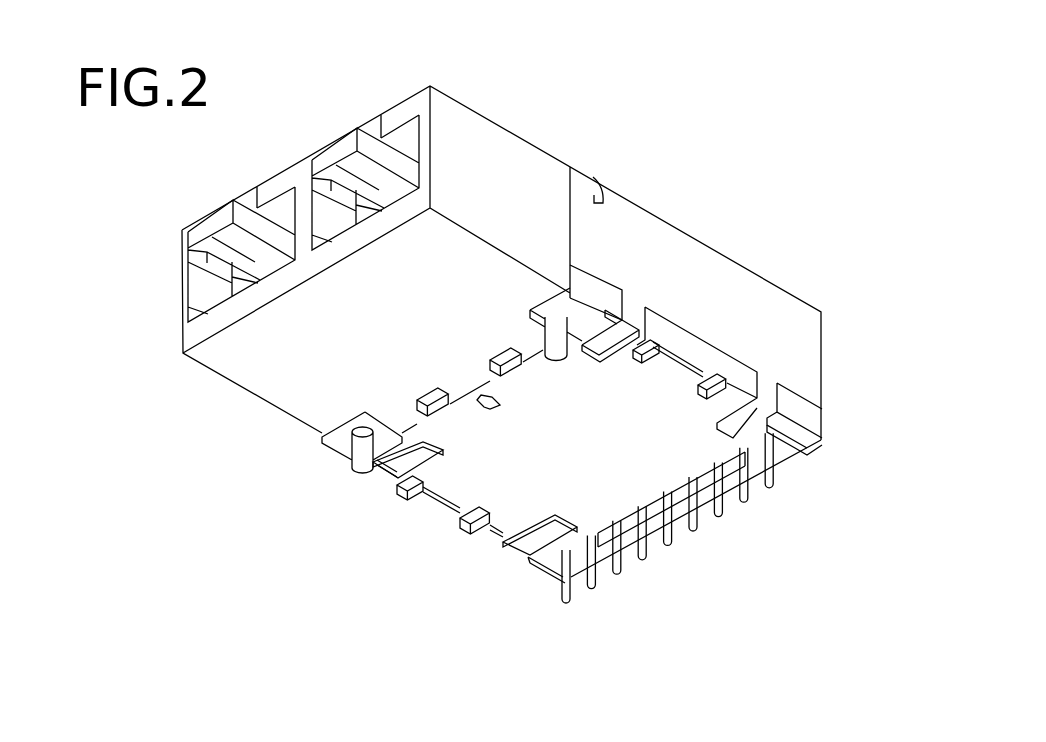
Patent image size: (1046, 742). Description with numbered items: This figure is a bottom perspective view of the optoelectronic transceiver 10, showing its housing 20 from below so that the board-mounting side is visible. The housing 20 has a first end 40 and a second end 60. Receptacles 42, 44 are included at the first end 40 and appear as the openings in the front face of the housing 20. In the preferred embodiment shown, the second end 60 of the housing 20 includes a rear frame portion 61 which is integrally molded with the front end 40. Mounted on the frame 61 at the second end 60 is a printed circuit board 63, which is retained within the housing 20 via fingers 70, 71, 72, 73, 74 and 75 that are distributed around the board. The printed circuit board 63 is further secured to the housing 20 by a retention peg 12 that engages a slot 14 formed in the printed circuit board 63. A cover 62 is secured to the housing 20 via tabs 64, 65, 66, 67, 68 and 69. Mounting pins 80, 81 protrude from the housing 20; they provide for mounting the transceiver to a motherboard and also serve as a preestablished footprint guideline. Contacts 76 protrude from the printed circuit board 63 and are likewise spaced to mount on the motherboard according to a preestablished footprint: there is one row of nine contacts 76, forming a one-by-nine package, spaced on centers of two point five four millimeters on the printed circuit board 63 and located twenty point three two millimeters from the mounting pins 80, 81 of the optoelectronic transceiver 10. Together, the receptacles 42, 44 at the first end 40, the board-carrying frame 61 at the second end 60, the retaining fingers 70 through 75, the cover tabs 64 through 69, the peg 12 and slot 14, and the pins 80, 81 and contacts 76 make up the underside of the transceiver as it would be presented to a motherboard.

The optoelectronic transceiver 10 is at (603, 150).
The retention peg 12 is at (495, 413).
The slot 14 is at (474, 419).
The housing 20 is at (593, 293).
The first end 40 is at (478, 138).
The receptacle 42 is at (215, 250).
The receptacle 44 is at (385, 165).
The second end 60 is at (782, 318).
The rear frame portion 61 is at (687, 342).
The cover 62 is at (684, 281).
The printed circuit board 63 is at (571, 493).
The tab 64 is at (390, 468).
The tab 65 is at (523, 547).
The tab 66 is at (627, 542).
The tab 67 is at (730, 488).
The tab 68 is at (732, 427).
The tab 69 is at (593, 355).
The finger 70 is at (642, 353).
The finger 71 is at (705, 393).
The finger 72 is at (408, 493).
The finger 73 is at (473, 528).
The finger 74 is at (546, 570).
The finger 75 is at (803, 440).
The contacts 76 is at (570, 597).
The mounting pin 80 is at (355, 455).
The mounting pin 81 is at (552, 341).